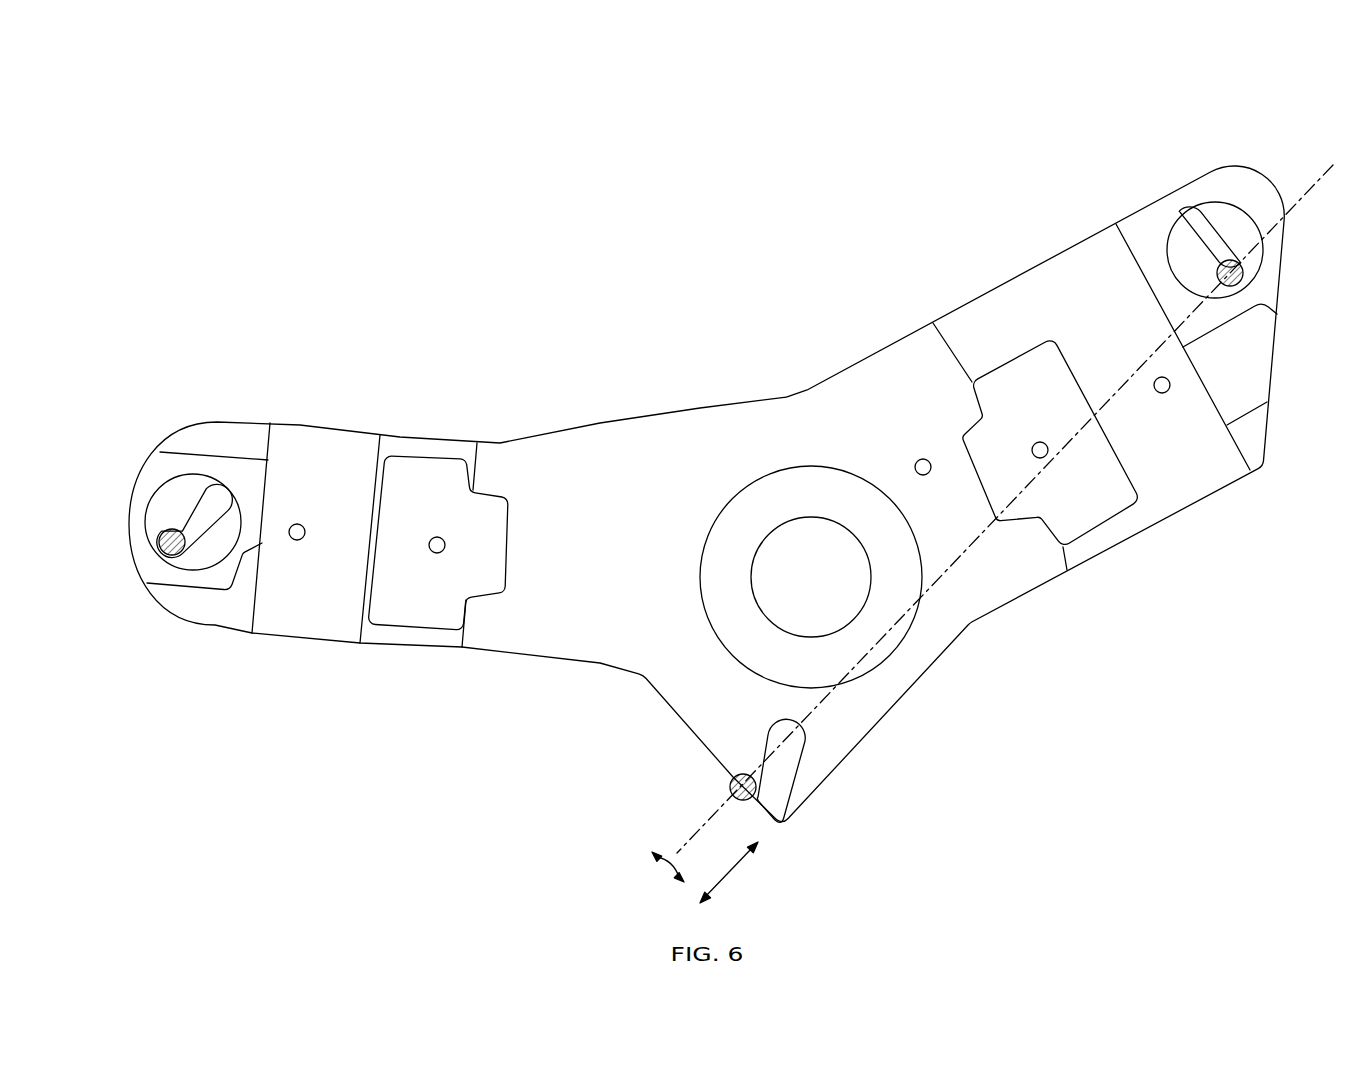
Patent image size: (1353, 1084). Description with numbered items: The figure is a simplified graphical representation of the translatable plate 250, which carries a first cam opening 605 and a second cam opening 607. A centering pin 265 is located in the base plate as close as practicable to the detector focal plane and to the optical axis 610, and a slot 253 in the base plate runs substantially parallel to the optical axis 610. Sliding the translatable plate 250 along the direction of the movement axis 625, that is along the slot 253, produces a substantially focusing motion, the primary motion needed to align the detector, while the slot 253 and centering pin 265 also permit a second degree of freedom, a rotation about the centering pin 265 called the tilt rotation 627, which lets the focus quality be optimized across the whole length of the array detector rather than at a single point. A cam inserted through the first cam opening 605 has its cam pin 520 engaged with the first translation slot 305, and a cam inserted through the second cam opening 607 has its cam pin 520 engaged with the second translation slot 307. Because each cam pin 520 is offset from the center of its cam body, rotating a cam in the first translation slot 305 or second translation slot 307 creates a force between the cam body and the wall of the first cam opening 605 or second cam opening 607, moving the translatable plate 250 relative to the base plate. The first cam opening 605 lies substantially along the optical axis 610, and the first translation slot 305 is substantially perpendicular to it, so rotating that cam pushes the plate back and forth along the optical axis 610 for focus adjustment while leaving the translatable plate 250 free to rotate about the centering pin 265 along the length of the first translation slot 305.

The translatable plate 250 is at (548, 460).
The slot 253 is at (757, 757).
The centering pin 265 is at (731, 780).
The first translation slot 305 is at (1193, 230).
The second translation slot 307 is at (211, 494).
The cam pin 520 is at (1195, 278).
The first cam opening 605 is at (1190, 284).
The second cam opening 607 is at (221, 540).
The optical axis 610 is at (938, 595).
The movement axis 625 is at (737, 866).
The tilt rotation 627 is at (660, 870).